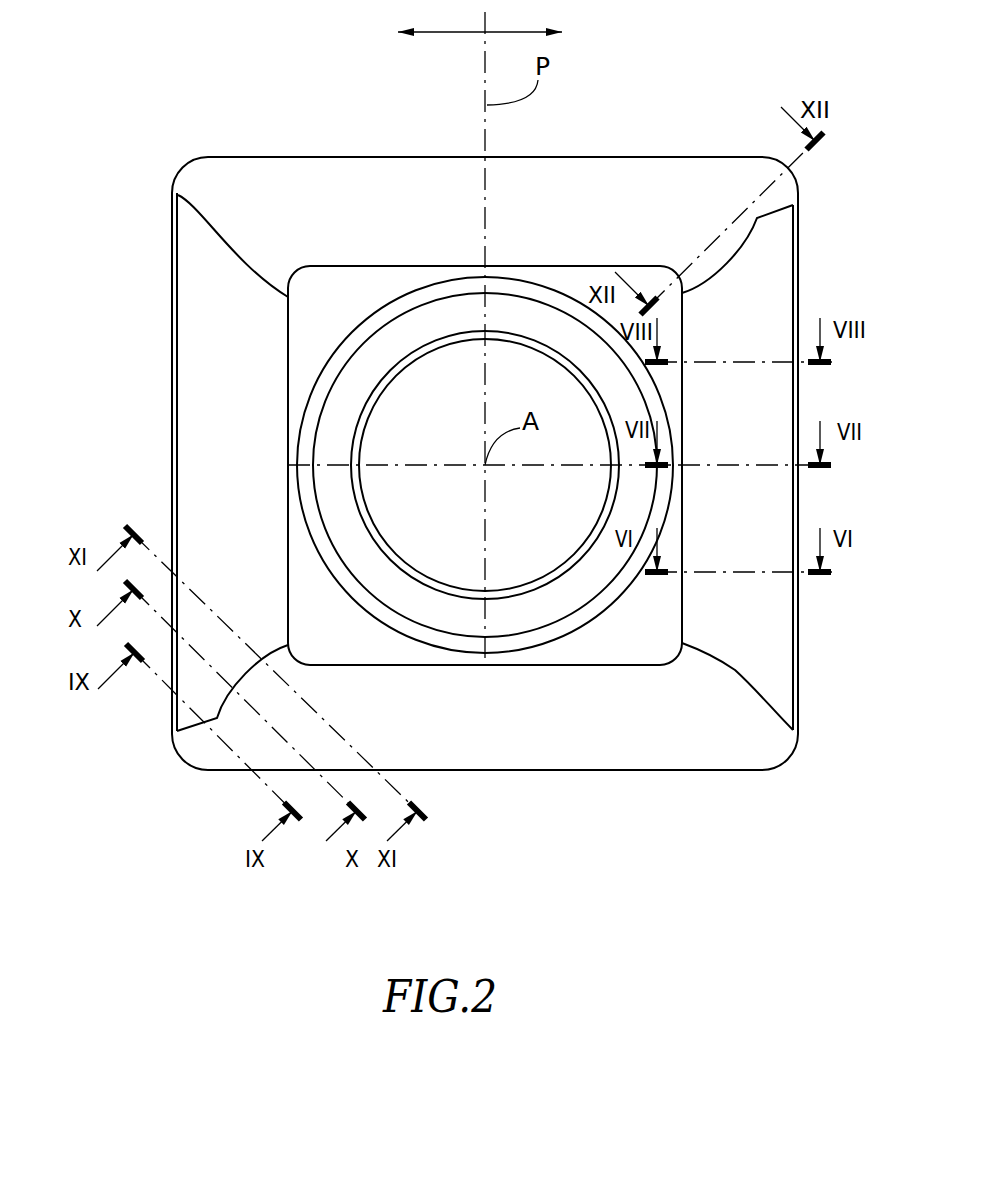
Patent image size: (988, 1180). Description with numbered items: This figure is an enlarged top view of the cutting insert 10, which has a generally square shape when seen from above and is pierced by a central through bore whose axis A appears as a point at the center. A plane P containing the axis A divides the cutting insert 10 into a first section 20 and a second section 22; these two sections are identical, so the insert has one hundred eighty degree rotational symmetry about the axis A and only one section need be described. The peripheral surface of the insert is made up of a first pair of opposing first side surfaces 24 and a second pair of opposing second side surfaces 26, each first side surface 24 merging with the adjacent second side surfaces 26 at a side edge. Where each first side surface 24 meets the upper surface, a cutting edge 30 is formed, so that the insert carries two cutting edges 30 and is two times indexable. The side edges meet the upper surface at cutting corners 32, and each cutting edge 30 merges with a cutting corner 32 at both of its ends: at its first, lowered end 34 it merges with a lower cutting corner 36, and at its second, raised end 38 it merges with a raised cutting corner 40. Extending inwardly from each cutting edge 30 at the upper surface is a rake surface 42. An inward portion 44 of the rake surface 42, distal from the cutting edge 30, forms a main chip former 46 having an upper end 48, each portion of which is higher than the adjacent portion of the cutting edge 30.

The cutting insert 10 is at (728, 852).
The first section 20 is at (419, 31).
The second section 22 is at (544, 31).
The first side surface 24 is at (118, 410).
The second side surface 26 is at (284, 130).
The cutting edge 30 is at (172, 252).
The cutting corner 32 is at (183, 157).
The lowered end 34 is at (172, 193).
The lower cutting corner 36 is at (180, 167).
The raised end 38 is at (172, 731).
The raised cutting corner 40 is at (178, 753).
The rake surface 42 is at (217, 440).
The inward portion 44 is at (272, 508).
The main chip former 46 is at (288, 326).
The upper end 48 is at (287, 385).